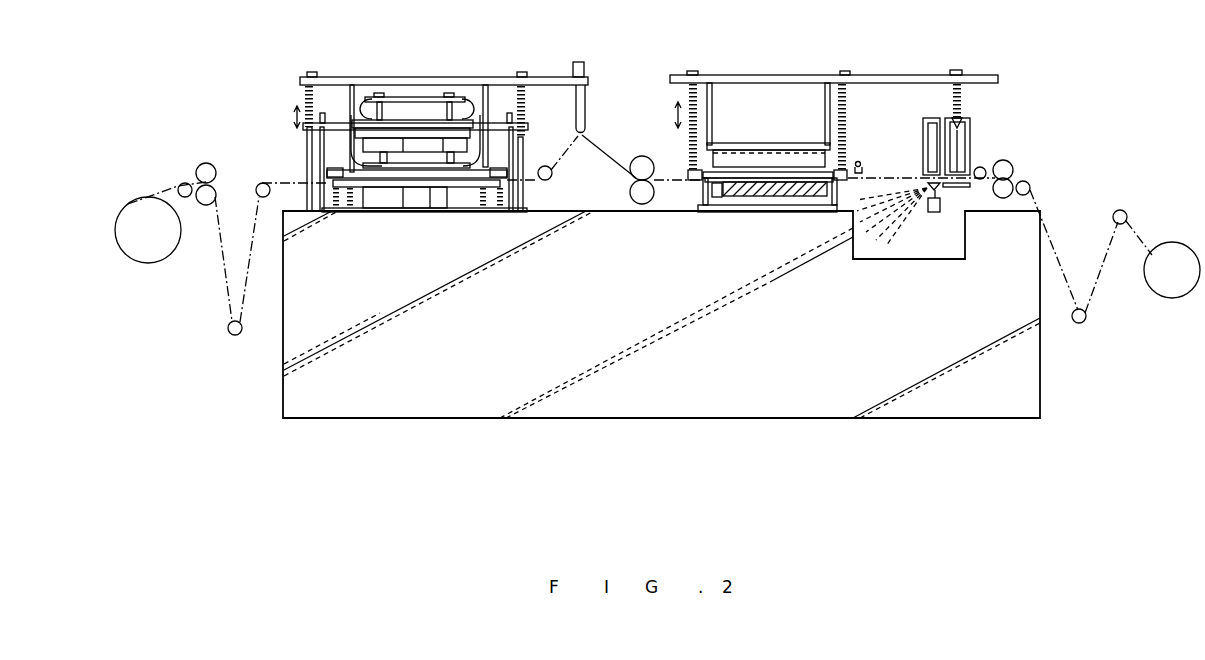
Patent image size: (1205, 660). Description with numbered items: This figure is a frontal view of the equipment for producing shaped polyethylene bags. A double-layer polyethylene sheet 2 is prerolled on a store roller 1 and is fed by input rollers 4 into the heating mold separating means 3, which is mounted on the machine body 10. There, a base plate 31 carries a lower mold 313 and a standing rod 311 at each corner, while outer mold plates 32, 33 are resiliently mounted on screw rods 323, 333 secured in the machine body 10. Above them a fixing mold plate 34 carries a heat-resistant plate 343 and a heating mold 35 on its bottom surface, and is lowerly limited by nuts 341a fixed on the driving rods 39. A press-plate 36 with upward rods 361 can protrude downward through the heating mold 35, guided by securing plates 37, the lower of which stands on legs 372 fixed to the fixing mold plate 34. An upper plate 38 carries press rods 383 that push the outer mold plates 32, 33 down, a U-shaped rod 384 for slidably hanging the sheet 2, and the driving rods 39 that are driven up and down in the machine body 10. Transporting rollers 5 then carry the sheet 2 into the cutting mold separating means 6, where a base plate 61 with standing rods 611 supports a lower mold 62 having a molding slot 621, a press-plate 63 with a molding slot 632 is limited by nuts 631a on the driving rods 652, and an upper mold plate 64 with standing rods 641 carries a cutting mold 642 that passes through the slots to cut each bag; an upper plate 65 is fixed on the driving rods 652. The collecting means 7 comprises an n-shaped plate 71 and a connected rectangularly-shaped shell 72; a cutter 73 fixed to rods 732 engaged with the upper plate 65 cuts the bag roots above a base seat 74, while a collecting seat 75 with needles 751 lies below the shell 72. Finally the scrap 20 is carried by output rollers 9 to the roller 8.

The store roller 1 is at (138, 198).
The double-layer polyethylene sheet 2 is at (186, 183).
The heating mold separating means 3 is at (300, 78).
The input rollers 4 is at (212, 166).
The transporting rollers 5 is at (646, 157).
The cutting mold separating means 6 is at (735, 75).
The collecting means 7 is at (972, 98).
The roller 8 is at (1175, 244).
The output rollers 9 is at (1012, 166).
The machine body 10 is at (283, 213).
The scrap 20 is at (1040, 200).
The base plate 31 is at (413, 213).
The outer mold plate 32 is at (457, 203).
The outer mold plate 33 is at (490, 172).
The fixing mold plate 34 is at (526, 92).
The heating mold 35 is at (422, 146).
The press-plate 36 is at (354, 100).
The securing plate 37 is at (466, 118).
The upper plate 38 is at (497, 78).
The driving rod 39 is at (308, 165).
The base plate 61 is at (770, 212).
The lower mold 62 is at (800, 192).
The press-plate 63 is at (748, 182).
The upper mold plate 64 is at (752, 144).
The upper plate 65 is at (759, 80).
The n-shaped plate 71 is at (970, 120).
The rectangularly-shaped shell 72 is at (930, 117).
The cutter 73 is at (968, 155).
The base seat 74 is at (960, 188).
The collecting seat 75 is at (935, 213).
The standing rod 311 is at (330, 172).
The lower mold 313 is at (408, 213).
The screw rod 323 is at (477, 207).
The screw rod 333 is at (493, 212).
The nut 341a is at (303, 128).
The heat-resistant plate 343 is at (392, 128).
The rod 361 is at (500, 128).
The leg 372 is at (366, 100).
The press rod 383 is at (313, 96).
The U-shaped rod 384 is at (586, 102).
The standing rod 611 is at (847, 183).
The molding slot 621 is at (717, 197).
The nut 631a is at (690, 180).
The molding slot 632 is at (692, 208).
The standing rod 641 is at (712, 122).
The cutting mold 642 is at (780, 156).
The driving rod 652 is at (848, 120).
The rod 732 is at (965, 88).
The needle 751 is at (927, 190).